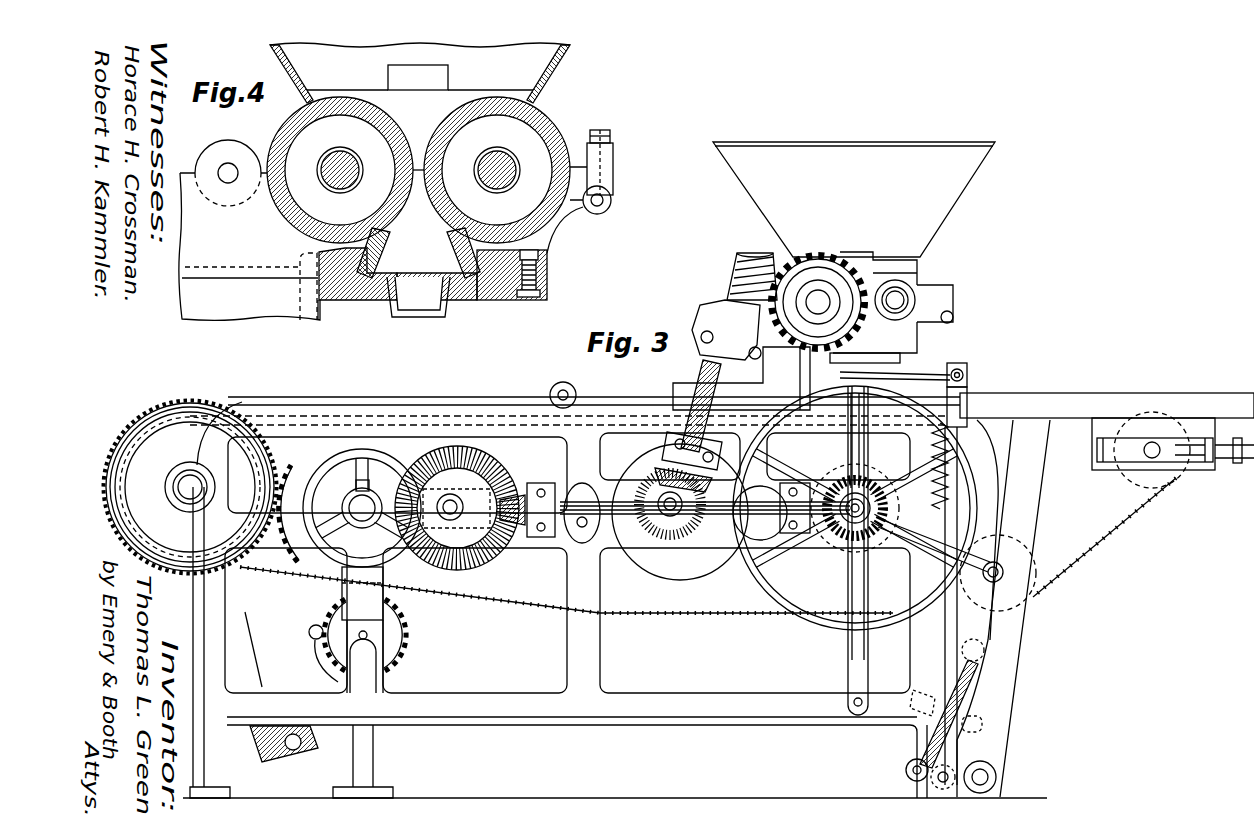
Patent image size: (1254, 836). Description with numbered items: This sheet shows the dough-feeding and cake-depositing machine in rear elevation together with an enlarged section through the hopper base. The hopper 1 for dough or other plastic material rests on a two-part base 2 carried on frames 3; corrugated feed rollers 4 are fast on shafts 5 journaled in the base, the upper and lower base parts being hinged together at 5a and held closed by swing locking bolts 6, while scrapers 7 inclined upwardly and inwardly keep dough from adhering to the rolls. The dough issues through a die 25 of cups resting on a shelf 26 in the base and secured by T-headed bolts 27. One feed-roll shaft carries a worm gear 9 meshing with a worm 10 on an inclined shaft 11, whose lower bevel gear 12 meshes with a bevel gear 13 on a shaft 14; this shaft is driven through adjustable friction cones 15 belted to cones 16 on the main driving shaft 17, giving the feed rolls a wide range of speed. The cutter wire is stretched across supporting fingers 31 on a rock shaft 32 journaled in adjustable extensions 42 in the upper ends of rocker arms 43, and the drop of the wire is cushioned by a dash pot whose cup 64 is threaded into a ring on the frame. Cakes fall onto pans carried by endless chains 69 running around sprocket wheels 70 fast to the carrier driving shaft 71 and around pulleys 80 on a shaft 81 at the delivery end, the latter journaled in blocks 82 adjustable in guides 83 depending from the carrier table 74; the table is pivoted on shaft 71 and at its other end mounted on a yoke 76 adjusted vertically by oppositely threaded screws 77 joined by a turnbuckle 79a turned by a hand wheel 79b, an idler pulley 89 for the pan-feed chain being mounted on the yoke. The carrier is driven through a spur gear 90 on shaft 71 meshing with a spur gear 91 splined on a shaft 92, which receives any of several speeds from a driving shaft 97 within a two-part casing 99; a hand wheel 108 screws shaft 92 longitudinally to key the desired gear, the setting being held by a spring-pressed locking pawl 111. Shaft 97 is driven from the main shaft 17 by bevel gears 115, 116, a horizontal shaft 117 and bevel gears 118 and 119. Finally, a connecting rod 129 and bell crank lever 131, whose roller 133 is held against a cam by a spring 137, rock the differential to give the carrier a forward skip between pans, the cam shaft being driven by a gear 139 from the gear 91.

In FIG. 4, the hopper 1 is at (548, 70).
In FIG. 3, the hopper 1 is at (927, 155).
In FIG. 4, the two part base 2 is at (293, 100).
In FIG. 3, the two part base 2 is at (920, 275).
In FIG. 3, the frames 3 is at (608, 708).
In FIG. 4, the corrugated feed rollers 4 is at (395, 121).
In FIG. 4, the feed roll shafts 5 is at (337, 153).
In FIG. 3, the feed roll shafts 5 is at (822, 295).
In FIG. 4, the hinge 5a is at (222, 167).
In FIG. 4, the swing locking bolts 6 is at (607, 157).
In FIG. 4, the scrapers 7 is at (380, 242).
In FIG. 3, the worm gear 9 is at (812, 258).
In FIG. 3, the worm 10 is at (737, 265).
In FIG. 3, the inclined shaft 11 is at (705, 367).
In FIG. 3, the bevel gear 12 is at (660, 476).
In FIG. 3, the bevel gear 13 is at (655, 497).
In FIG. 3, the shaft 14 is at (640, 514).
In FIG. 3, the adjustable friction cones 15 is at (700, 568).
In FIG. 3, the adjustable cones 16 is at (843, 575).
In FIG. 3, the main driving shaft 17 is at (870, 572).
In FIG. 4, the die 25 is at (455, 303).
In FIG. 3, the die 25 is at (840, 375).
In FIG. 4, the shelf 26 is at (365, 297).
In FIG. 3, the shelf 26 is at (830, 358).
In FIG. 4, the T-headed bolts 27 is at (540, 292).
In FIG. 3, the supporting fingers 31 is at (915, 323).
In FIG. 3, the rock shaft 32 is at (968, 372).
In FIG. 3, the adjustable extensions 42 is at (968, 392).
In FIG. 3, the rocker arms 43 is at (968, 511).
In FIG. 3, the cup 64 is at (772, 588).
In FIG. 3, the endless chains 69 is at (1107, 545).
In FIG. 3, the sprocket wheels 70 is at (150, 410).
In FIG. 3, the carrier driving shaft 71 is at (184, 480).
In FIG. 3, the adjustable carrier table 74 is at (1055, 387).
In FIG. 3, the yoke 76 is at (1025, 481).
In FIG. 3, the oppositely threaded screws 77 is at (980, 668).
In FIG. 3, the turnbuckle 79a is at (935, 702).
In FIG. 3, the hand wheel 79b is at (982, 726).
In FIG. 3, the pulleys 80 is at (1176, 472).
In FIG. 3, the shaft 81 is at (1152, 442).
In FIG. 3, the blocks 82 is at (1148, 456).
In FIG. 3, the guides 83 is at (1092, 450).
In FIG. 3, the idler pulley 89 is at (1020, 555).
In FIG. 3, the spur gear 90 is at (180, 402).
In FIG. 3, the spur gear 91 is at (293, 457).
In FIG. 3, the carrier driving shaft 92 is at (445, 450).
In FIG. 3, the driving shaft 97 is at (450, 495).
In FIG. 3, the two part casing 99 is at (301, 615).
In FIG. 3, the hand wheel 108 is at (360, 447).
In FIG. 3, the spring pressed locking pawl 111 is at (355, 495).
In FIG. 3, the bevel gear 115 is at (848, 490).
In FIG. 3, the bevel gear 116 is at (796, 540).
In FIG. 3, the horizontal shaft 117 is at (526, 545).
In FIG. 3, the bevel gear 118 is at (540, 483).
In FIG. 3, the bevel gear 119 is at (492, 556).
In FIG. 3, the connecting rod 129 is at (243, 636).
In FIG. 3, the bell crank lever 131 is at (315, 662).
In FIG. 3, the roller 133 is at (309, 635).
In FIG. 3, the spring 137 is at (263, 758).
In FIG. 3, the gear 139 is at (408, 637).